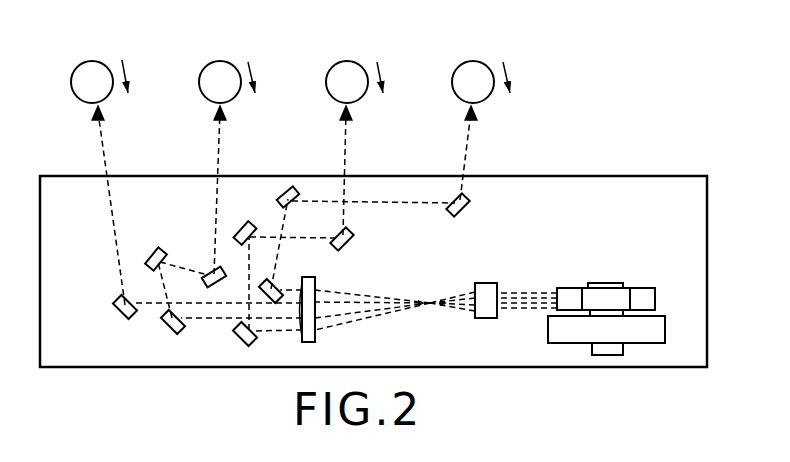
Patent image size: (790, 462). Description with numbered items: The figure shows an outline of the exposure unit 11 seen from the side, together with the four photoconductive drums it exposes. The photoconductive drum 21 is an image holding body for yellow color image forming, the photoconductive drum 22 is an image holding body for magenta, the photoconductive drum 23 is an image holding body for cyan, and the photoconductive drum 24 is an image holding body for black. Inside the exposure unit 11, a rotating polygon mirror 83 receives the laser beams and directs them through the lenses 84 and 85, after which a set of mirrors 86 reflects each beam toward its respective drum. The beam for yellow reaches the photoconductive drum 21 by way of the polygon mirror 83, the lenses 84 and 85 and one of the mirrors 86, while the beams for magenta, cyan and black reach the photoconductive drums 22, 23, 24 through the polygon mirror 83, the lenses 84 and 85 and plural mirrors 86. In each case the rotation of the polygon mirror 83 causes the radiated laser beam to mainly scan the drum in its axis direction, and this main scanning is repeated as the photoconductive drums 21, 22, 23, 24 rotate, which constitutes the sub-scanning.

The exposure unit 11 is at (587, 175).
The photoconductive drum 21 is at (94, 60).
The photoconductive drum 22 is at (220, 60).
The photoconductive drum 23 is at (349, 60).
The photoconductive drum 24 is at (477, 60).
The polygon mirror 83 is at (636, 288).
The lens 84 is at (485, 282).
The lens 85 is at (316, 341).
The mirror 86 is at (117, 313).